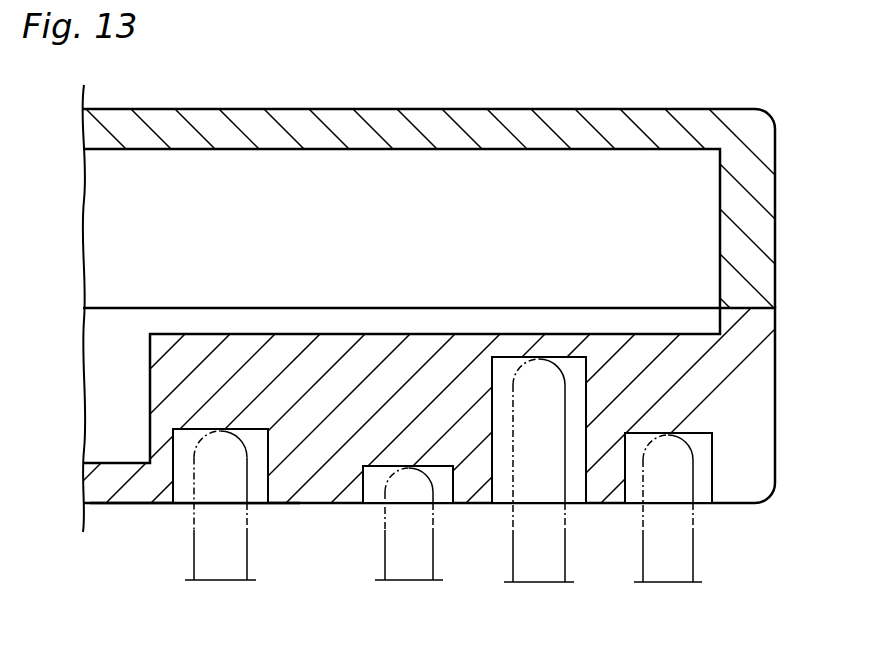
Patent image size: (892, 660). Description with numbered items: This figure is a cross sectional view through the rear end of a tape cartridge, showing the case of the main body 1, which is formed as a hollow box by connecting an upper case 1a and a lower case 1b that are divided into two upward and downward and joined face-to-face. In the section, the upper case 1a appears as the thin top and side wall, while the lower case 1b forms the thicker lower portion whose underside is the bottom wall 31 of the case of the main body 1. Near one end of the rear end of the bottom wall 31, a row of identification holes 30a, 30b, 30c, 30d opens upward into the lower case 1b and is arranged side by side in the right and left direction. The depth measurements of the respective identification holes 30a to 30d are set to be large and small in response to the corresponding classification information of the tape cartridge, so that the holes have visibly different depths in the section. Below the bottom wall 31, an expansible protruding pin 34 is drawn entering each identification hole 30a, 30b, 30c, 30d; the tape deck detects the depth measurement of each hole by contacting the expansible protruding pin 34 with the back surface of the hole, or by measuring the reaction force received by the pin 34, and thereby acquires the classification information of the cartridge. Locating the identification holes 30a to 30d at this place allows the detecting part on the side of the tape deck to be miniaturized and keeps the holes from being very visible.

The main body 1 is at (800, 126).
The upper case 1a is at (762, 231).
The lower case 1b is at (758, 395).
The bottom wall 31 is at (122, 504).
The identification hole 30a is at (262, 476).
The identification hole 30b is at (363, 483).
The identification hole 30c is at (493, 470).
The identification hole 30d is at (625, 478).
The expansible protruding pin 34 is at (248, 565).